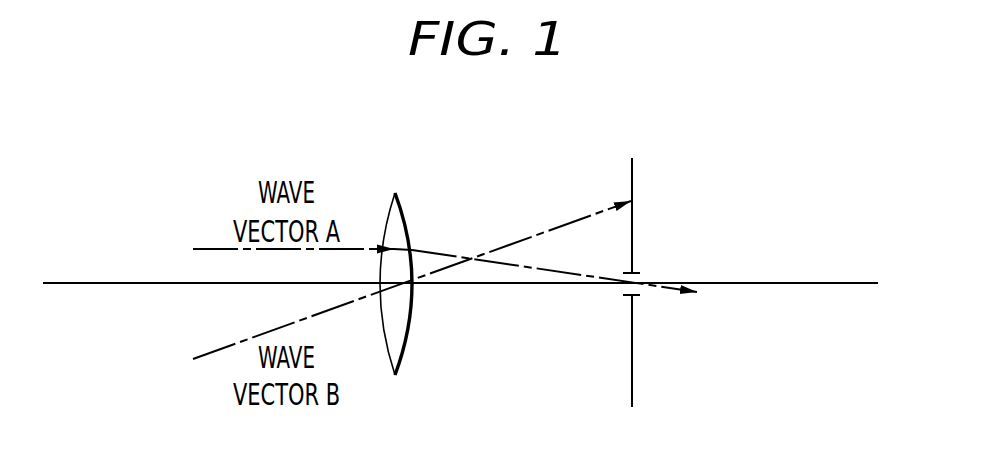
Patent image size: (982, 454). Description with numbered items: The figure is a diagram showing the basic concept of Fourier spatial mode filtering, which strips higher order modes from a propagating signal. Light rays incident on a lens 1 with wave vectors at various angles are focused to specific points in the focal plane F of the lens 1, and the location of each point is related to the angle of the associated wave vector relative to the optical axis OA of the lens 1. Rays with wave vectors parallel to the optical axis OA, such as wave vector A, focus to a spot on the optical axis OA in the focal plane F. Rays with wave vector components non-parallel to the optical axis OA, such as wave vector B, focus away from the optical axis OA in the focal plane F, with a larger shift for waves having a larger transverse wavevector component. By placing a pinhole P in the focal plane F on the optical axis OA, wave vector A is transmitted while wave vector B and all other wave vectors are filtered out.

The lens 1 is at (403, 211).
The optical axis OA is at (78, 282).
The focal plane F is at (632, 176).
The pinhole P is at (621, 293).